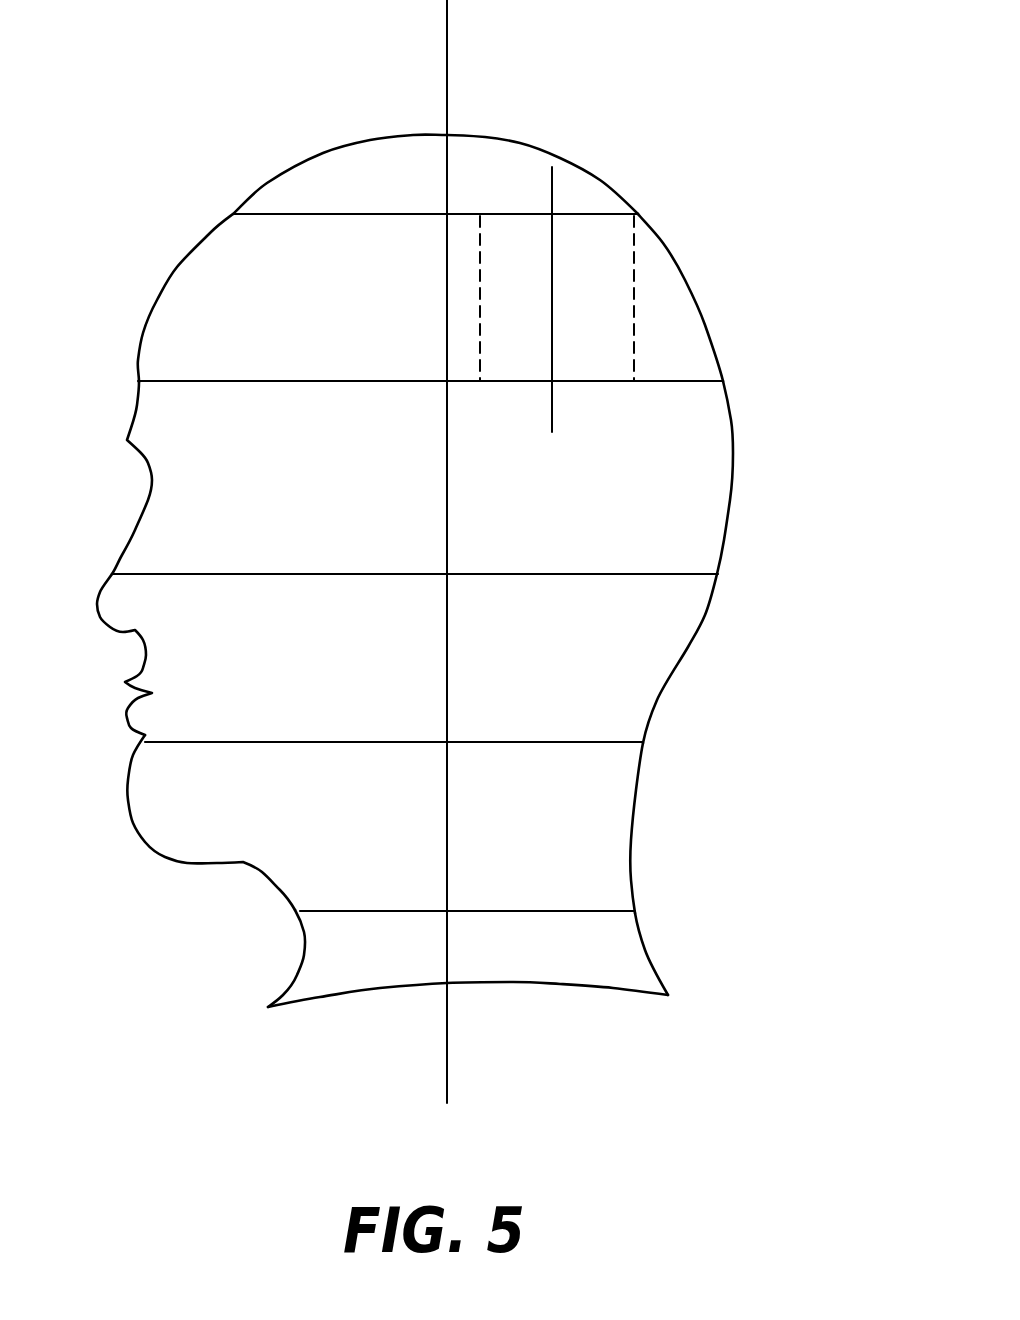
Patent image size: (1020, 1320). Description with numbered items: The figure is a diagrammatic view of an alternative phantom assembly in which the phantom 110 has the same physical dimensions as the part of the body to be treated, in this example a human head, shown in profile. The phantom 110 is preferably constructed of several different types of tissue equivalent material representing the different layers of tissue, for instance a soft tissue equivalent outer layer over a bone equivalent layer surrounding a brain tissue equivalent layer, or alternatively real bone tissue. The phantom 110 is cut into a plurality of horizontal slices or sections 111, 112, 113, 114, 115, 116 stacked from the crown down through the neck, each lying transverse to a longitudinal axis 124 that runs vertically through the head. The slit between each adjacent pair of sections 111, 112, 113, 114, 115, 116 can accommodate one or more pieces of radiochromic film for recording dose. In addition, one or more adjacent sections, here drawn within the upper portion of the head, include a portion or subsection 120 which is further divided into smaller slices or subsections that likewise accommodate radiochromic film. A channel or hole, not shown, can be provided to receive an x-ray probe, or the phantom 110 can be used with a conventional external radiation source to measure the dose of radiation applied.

The phantom 110 is at (107, 153).
The horizontal slice or section 111 is at (587, 197).
The horizontal slice or section 112 is at (665, 333).
The horizontal slice or section 113 is at (688, 473).
The horizontal slice or section 114 is at (655, 660).
The horizontal slice or section 115 is at (587, 840).
The horizontal slice or section 116 is at (622, 960).
The subsection 120 is at (597, 263).
The longitudinal axis 124 is at (447, 93).